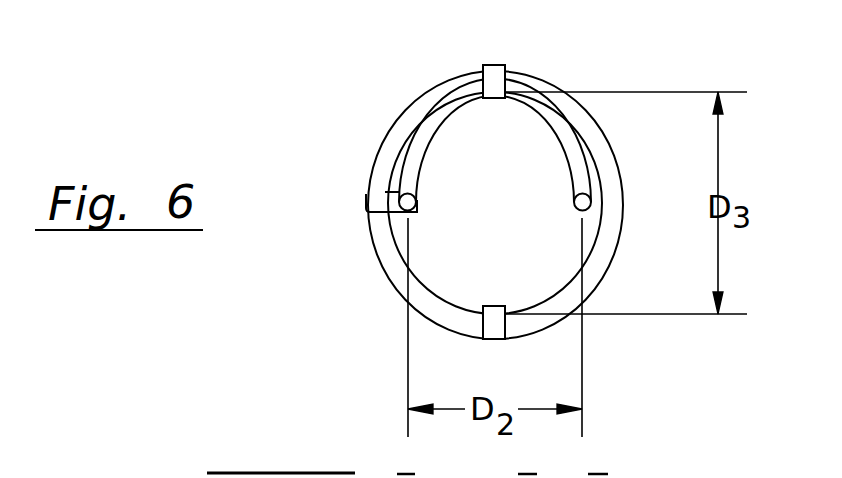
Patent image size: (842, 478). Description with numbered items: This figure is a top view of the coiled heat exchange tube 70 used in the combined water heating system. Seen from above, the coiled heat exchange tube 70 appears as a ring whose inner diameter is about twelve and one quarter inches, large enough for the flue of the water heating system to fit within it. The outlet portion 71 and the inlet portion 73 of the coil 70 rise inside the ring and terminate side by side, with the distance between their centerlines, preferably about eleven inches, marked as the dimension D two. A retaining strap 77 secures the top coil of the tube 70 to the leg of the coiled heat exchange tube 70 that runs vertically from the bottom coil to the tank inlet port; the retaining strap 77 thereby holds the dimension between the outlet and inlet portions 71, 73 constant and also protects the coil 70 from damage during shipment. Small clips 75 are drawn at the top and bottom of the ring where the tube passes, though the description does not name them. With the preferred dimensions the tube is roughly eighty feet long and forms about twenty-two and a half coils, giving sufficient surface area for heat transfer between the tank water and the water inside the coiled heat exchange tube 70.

The coiled heat exchange tube 70 is at (342, 243).
The outlet portion 71 is at (593, 168).
The inlet portion 73 is at (397, 170).
The retaining clip 75 is at (507, 67).
The retaining strap 77 is at (367, 200).